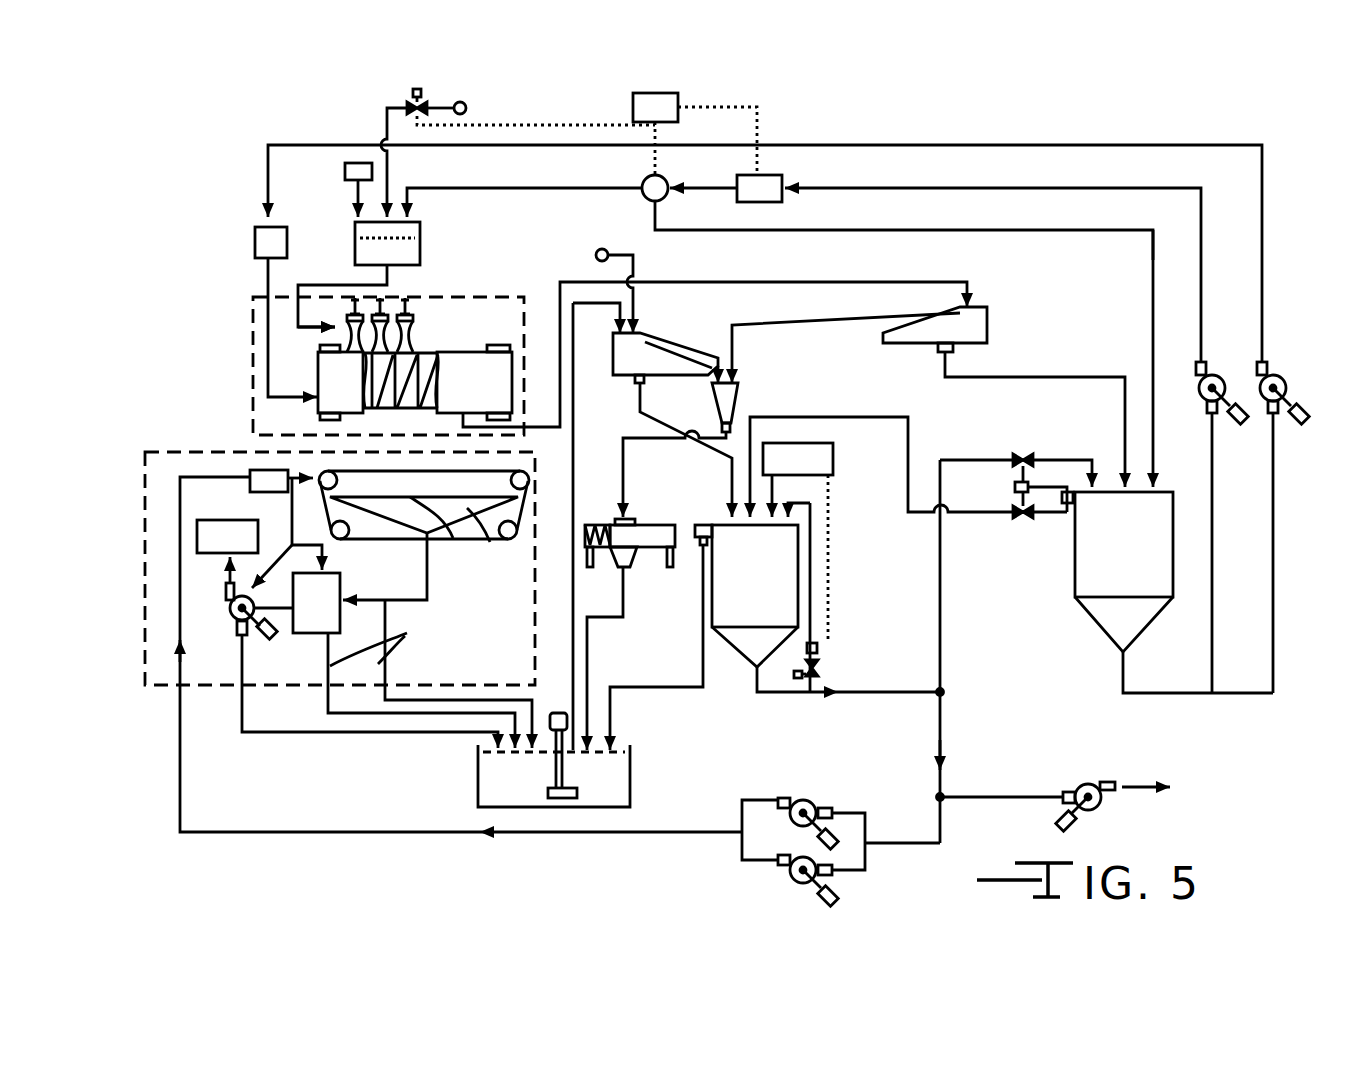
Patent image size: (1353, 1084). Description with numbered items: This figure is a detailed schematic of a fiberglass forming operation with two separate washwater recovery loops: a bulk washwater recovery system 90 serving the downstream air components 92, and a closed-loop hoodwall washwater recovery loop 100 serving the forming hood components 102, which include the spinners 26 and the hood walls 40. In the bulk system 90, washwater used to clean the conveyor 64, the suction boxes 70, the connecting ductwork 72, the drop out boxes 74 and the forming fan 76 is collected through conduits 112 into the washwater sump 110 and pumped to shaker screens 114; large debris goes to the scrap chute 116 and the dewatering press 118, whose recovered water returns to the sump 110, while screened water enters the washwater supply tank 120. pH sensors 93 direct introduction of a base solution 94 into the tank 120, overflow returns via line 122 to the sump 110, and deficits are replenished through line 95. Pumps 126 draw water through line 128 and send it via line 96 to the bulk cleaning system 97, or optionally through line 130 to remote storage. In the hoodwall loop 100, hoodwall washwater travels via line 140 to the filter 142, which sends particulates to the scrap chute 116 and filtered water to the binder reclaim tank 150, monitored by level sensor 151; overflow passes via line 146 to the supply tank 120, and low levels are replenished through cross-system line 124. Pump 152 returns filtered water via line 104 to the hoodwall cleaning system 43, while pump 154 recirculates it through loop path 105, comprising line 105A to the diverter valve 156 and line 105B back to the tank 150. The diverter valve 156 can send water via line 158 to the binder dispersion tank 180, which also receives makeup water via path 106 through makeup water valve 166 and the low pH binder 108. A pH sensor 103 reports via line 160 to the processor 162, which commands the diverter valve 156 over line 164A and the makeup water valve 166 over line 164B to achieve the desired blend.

The spinner 26 is at (415, 323).
The hood wall 40 is at (342, 388).
The hoodwall cleaning system 43 is at (255, 242).
The porous conveyor 64 is at (440, 531).
The suction boxes 70 is at (486, 537).
The connecting ductwork 72 is at (425, 566).
The drop out boxes 74 is at (340, 589).
The forming fan 76 is at (231, 618).
The bulk washwater recovery system 90 is at (345, 850).
The downstream air components 92 is at (143, 626).
The pH sensors 93 is at (820, 662).
The base solution 94 is at (833, 462).
The makeup water line 95 is at (622, 254).
The line 96 is at (182, 792).
The bulk cleaning system 97 is at (262, 492).
The hoodwall washwater recovery loop 100 is at (1165, 130).
The forming hood components 102 is at (253, 337).
The pH sensor 103 is at (737, 192).
The line 104 is at (1075, 145).
The re-circulating loop path 105 is at (1160, 255).
The line 105A is at (975, 188).
The line 105B is at (1093, 230).
The makeup water path 106 is at (456, 104).
The low pH binder 108 is at (345, 175).
The washwater sump 110 is at (478, 775).
The conduits or lines 112 is at (431, 674).
The shaker screens 114 is at (648, 342).
The scrap chute 116 is at (712, 401).
The dewatering press 118 is at (643, 522).
The washwater supply tank 120 is at (780, 582).
The conduit or line 122 is at (703, 648).
The cross-system line 124 is at (942, 612).
The pumps 126 is at (790, 868).
The conduit or line 128 is at (940, 720).
The line 130 is at (1088, 782).
The conduit or line 140 is at (560, 282).
The filter 142 is at (987, 332).
The line 146 is at (806, 417).
The binder reclaim tank 150 is at (1140, 573).
The level sensor 151 is at (1073, 500).
The pump 152 is at (1278, 372).
The pump 154 is at (1200, 395).
The diverter valve 156 is at (643, 196).
The line 158 is at (510, 188).
The line 160 is at (757, 118).
The processor 162 is at (678, 118).
The line 164A is at (652, 158).
The line 164B is at (600, 125).
The makeup water valve 166 is at (412, 106).
The binder dispersion tank 180 is at (420, 243).